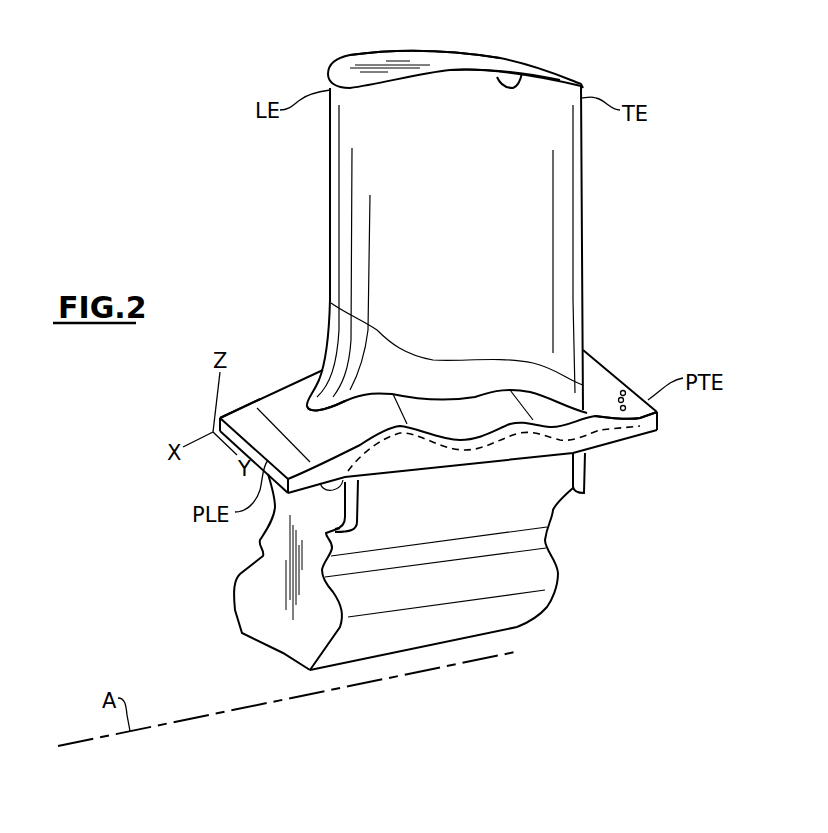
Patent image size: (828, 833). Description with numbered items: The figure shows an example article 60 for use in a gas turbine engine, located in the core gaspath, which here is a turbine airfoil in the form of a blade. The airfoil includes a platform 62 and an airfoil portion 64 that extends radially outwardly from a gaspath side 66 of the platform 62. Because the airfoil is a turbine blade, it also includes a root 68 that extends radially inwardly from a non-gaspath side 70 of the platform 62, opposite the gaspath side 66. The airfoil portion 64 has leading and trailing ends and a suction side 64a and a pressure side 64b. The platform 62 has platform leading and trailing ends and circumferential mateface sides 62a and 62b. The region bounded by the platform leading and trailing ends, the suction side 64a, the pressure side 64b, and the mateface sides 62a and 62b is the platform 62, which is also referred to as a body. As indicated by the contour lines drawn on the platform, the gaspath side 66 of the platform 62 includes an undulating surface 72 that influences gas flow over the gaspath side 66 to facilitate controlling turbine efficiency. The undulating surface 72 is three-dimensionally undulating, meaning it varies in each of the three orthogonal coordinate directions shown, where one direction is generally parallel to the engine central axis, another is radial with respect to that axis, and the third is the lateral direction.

The article 60 is at (172, 476).
The platform 62 is at (630, 444).
The circumferential mateface side 62a is at (643, 427).
The circumferential mateface side 62b is at (248, 406).
The airfoil portion 64 is at (580, 247).
The suction side 64a is at (456, 50).
The pressure side 64b is at (520, 78).
The gaspath side 66 is at (607, 394).
The root 68 is at (558, 573).
The non-gaspath side 70 is at (492, 461).
The undulating surface 72 is at (340, 423).